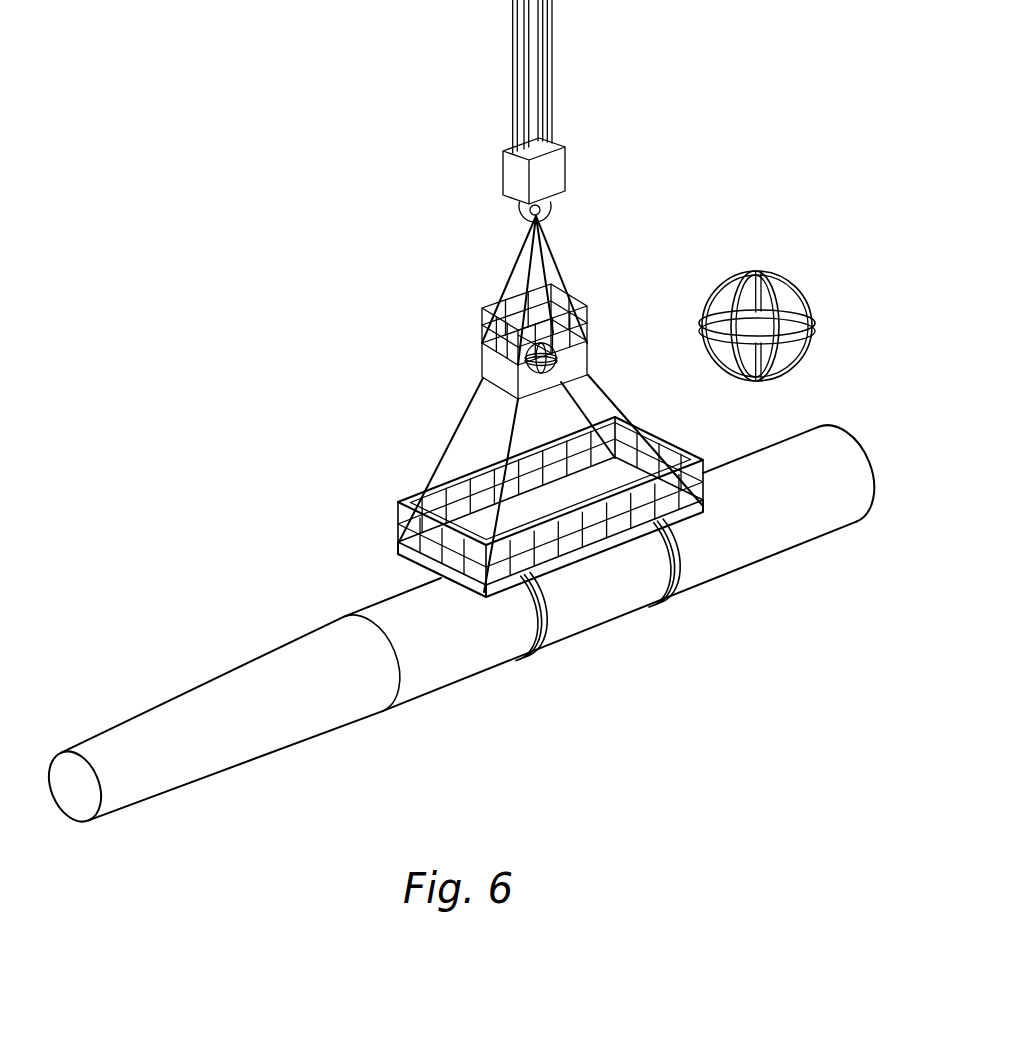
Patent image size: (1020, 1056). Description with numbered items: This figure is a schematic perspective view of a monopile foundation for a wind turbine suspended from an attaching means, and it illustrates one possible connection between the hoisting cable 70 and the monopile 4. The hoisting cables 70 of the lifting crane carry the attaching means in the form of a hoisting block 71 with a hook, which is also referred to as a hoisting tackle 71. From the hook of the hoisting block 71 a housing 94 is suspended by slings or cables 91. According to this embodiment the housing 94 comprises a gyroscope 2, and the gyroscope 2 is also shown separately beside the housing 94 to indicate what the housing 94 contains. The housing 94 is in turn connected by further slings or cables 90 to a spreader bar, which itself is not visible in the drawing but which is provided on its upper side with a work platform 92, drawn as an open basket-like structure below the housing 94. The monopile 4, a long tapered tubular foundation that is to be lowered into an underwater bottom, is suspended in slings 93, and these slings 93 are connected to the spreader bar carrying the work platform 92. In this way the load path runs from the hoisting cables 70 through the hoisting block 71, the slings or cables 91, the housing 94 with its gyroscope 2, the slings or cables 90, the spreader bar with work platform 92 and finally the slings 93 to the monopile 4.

The hoisting cables 70 is at (518, 62).
The hoisting block 71 is at (514, 176).
The slings or cables 91 is at (525, 275).
The housing 94 is at (462, 350).
The slings or cables 90 is at (503, 446).
The work platform 92 is at (398, 565).
The slings 93 is at (682, 563).
The monopile 4 is at (438, 662).
The gyroscope 2 is at (826, 291).